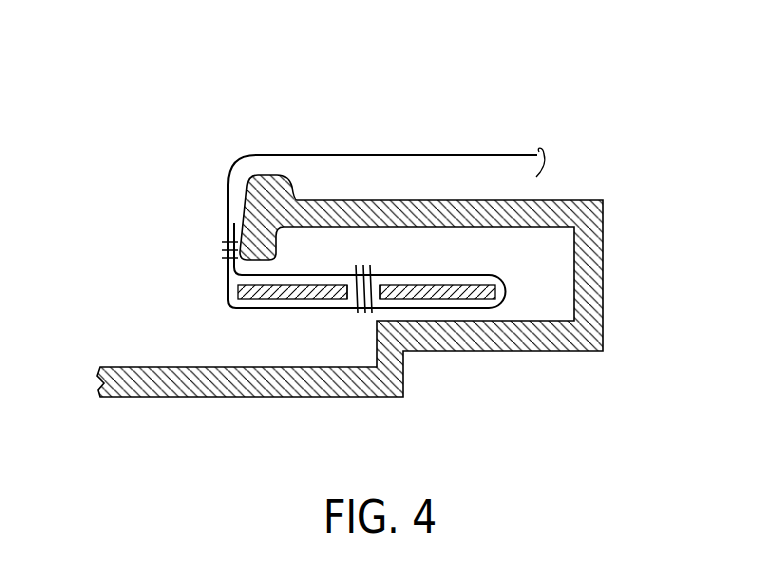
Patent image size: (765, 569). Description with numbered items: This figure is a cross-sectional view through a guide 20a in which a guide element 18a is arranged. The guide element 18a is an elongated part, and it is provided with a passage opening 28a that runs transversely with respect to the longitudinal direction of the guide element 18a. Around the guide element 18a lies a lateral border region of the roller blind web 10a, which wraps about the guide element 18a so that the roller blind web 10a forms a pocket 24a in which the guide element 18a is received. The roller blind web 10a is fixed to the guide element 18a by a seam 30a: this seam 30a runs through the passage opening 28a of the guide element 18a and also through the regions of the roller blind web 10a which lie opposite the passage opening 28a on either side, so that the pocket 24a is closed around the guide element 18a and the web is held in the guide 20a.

The roller blind web 10a is at (442, 154).
The guide 20a is at (603, 313).
The pocket 24a is at (215, 291).
The guide element 18a is at (442, 300).
The passage opening 28a is at (350, 298).
The seam 30a is at (361, 251).